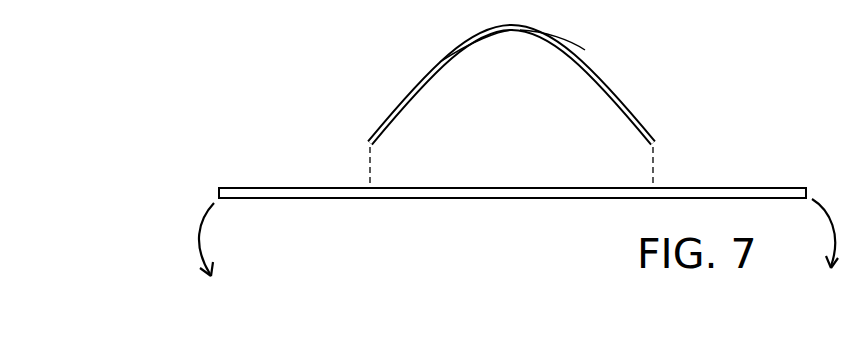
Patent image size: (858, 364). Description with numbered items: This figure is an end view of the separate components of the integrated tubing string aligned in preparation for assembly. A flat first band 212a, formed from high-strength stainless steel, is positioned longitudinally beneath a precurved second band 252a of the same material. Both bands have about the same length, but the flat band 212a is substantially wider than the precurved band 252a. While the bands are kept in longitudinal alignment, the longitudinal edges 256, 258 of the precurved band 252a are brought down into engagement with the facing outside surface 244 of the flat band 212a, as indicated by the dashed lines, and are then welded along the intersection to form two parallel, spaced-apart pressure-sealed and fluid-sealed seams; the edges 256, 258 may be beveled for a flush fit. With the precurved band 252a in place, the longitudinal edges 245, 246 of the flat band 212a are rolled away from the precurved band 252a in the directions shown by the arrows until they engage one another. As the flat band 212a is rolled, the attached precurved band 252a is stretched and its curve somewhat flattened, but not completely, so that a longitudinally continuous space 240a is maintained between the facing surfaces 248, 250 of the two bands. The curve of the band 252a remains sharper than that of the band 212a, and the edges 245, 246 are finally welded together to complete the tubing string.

The flat first band 212a is at (326, 199).
The longitudinally continuous space 240a is at (554, 114).
The outside surface 244 is at (733, 187).
The longitudinal edge 245 is at (817, 161).
The longitudinal edge 246 is at (218, 191).
The facing surface 248 is at (463, 187).
The facing surface 250 is at (460, 38).
The precurved second band 252a is at (573, 40).
The longitudinal edge 256 is at (655, 143).
The longitudinal edge 258 is at (370, 143).